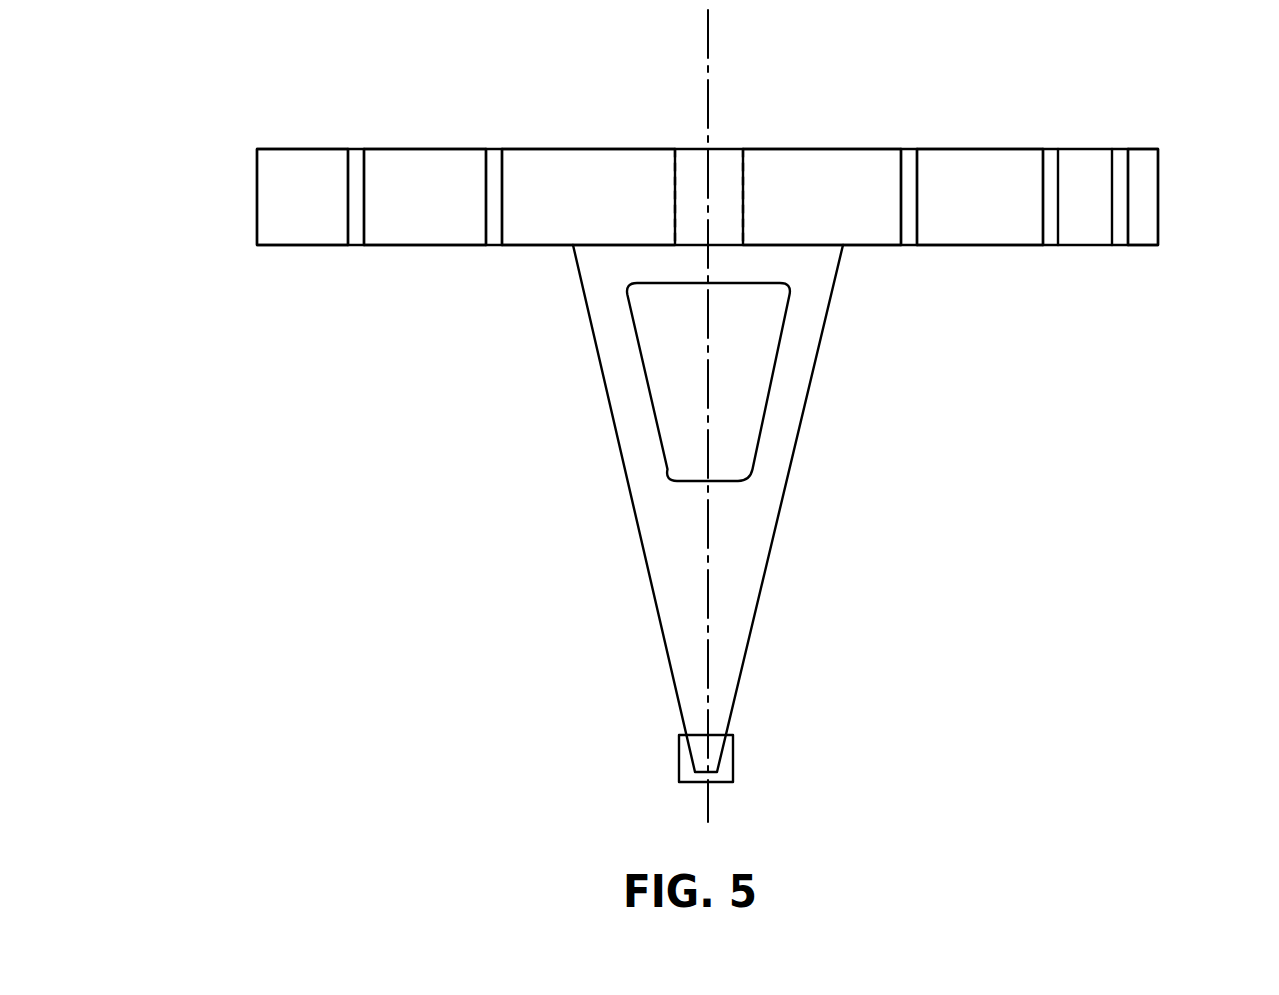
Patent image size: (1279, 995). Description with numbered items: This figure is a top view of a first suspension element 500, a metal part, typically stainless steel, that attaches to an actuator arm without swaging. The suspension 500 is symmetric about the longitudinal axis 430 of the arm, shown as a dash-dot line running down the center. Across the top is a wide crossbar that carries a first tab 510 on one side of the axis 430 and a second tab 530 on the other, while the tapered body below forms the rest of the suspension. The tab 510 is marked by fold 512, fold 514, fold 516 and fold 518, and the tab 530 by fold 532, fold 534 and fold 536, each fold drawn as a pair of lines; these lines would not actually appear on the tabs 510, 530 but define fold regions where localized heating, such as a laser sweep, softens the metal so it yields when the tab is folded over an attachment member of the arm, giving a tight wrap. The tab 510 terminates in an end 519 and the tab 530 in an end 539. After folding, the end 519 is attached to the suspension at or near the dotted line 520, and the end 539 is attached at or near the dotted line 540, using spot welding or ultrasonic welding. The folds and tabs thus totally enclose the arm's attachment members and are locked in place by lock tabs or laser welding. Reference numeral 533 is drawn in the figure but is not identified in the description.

The first suspension element 500 is at (795, 450).
The longitudinal axis 430 is at (711, 42).
The fold 518 is at (298, 246).
The end of first tab 519 is at (275, 193).
The fold 516 is at (353, 237).
The first tab 510 is at (392, 157).
The fold 514 is at (493, 235).
The fold 512 is at (536, 160).
The dotted line 520 is at (673, 177).
The dotted line 540 is at (743, 178).
The fold 532 is at (853, 165).
The fold 534 is at (907, 238).
The second tab 530 is at (985, 158).
The fold 536 is at (1049, 237).
The right outer slot 533 is at (1119, 237).
The end of second tab 539 is at (1153, 193).